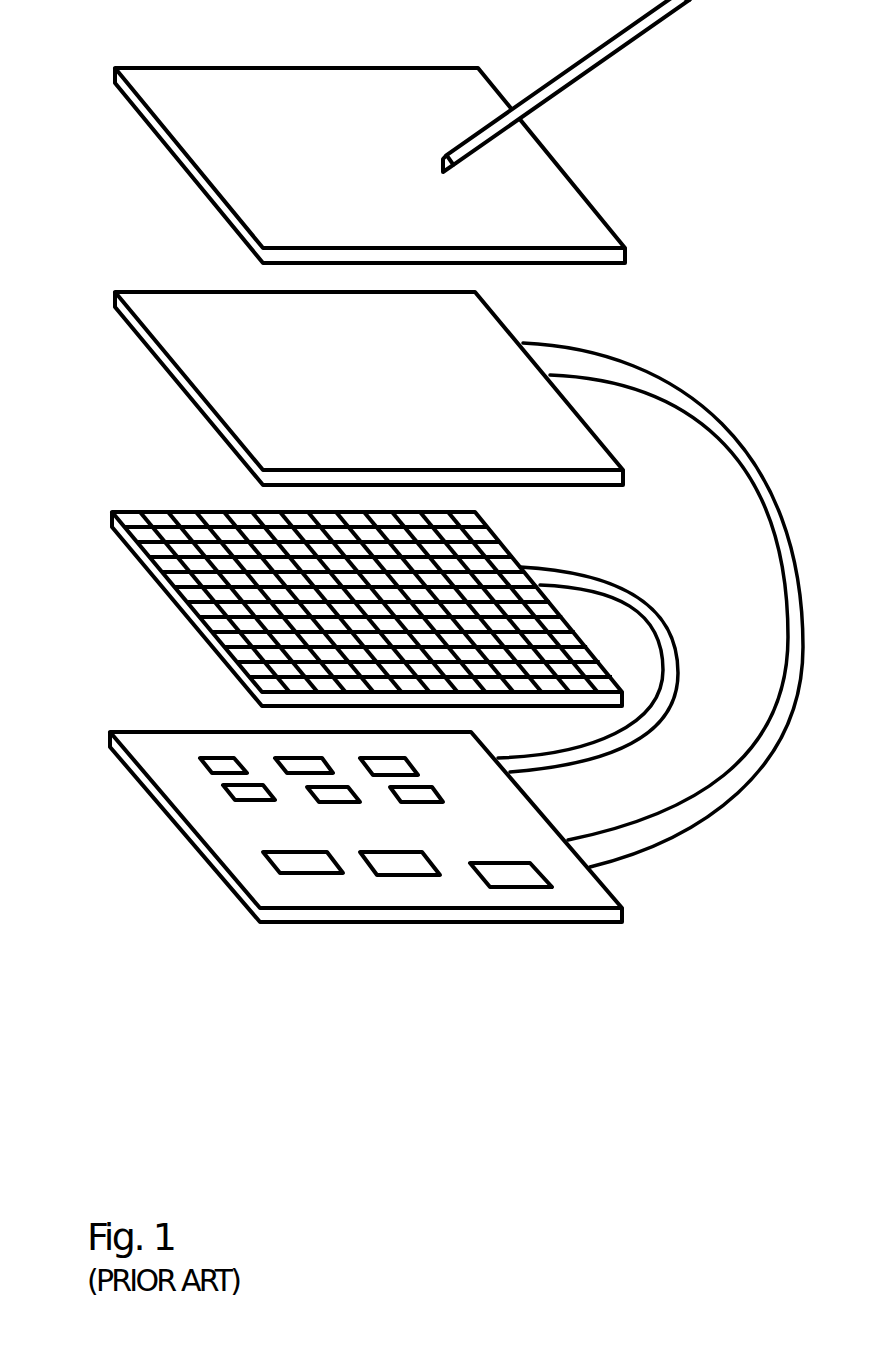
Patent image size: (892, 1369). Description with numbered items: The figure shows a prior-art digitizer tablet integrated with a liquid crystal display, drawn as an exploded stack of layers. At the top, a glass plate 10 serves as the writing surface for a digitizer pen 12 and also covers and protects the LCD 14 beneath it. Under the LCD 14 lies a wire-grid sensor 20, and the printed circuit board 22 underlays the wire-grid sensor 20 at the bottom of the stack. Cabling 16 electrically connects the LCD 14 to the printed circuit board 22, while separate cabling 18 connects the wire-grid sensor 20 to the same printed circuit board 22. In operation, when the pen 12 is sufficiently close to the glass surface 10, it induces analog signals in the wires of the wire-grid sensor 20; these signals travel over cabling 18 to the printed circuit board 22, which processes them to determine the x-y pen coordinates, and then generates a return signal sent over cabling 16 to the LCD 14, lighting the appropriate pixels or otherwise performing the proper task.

The glass plate 10 is at (600, 195).
The digitizer pen 12 is at (655, 42).
The liquid crystal display 14 is at (157, 378).
The cabling 16 is at (718, 418).
The cabling 18 is at (608, 570).
The wire-grid sensor 20 is at (140, 585).
The printed circuit board 22 is at (180, 845).